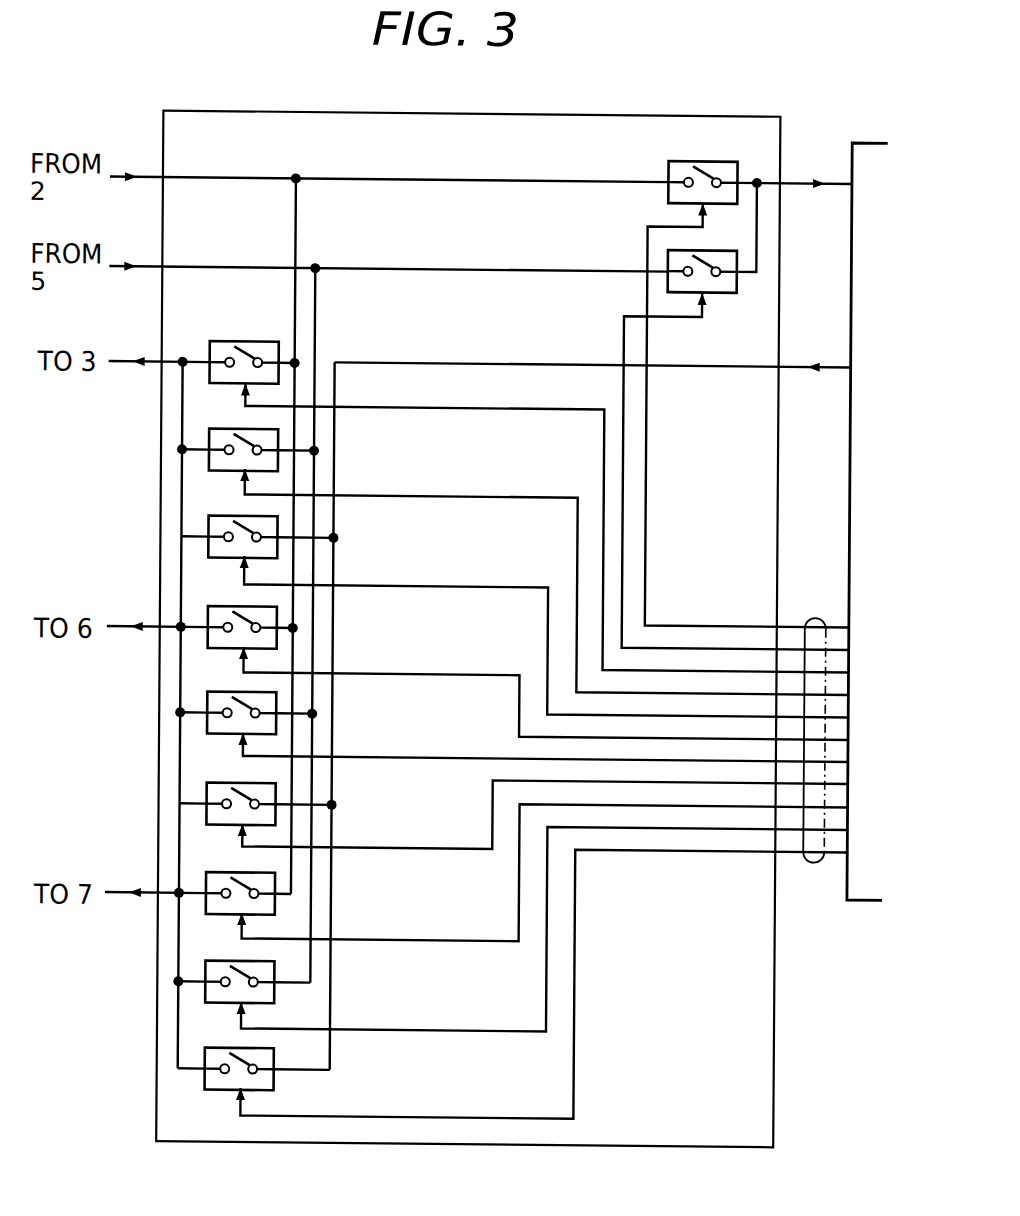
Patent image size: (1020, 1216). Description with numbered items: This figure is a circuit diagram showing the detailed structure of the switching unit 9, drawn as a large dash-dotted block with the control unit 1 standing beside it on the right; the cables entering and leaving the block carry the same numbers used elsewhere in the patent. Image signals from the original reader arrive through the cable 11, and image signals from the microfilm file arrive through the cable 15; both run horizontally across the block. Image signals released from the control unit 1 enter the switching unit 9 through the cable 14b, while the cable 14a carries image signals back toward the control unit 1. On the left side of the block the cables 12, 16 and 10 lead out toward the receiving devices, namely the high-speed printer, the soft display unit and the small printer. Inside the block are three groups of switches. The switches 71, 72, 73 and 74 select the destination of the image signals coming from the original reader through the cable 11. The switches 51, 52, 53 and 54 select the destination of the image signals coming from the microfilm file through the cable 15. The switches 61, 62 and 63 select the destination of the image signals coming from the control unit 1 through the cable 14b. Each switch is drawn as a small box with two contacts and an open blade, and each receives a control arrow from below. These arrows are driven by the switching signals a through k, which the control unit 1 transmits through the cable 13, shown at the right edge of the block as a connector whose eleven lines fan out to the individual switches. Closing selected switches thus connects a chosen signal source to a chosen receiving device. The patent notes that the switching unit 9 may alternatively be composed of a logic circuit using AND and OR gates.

The control unit 1 is at (862, 139).
The switching unit 9 is at (667, 113).
The output line to 7 10 is at (122, 894).
The cable 11 is at (121, 178).
The output line to 3 12 is at (122, 362).
The cable 13 is at (815, 859).
The signal line 14a is at (799, 185).
The cable 14b is at (795, 367).
The cable 15 is at (121, 268).
The output line to 6 16 is at (120, 628).
The switch 51 is at (721, 295).
The switch 52 is at (230, 431).
The switch 53 is at (230, 694).
The switch 54 is at (238, 965).
The switch 61 is at (230, 519).
The switch 62 is at (230, 786).
The switch 63 is at (231, 1050).
The switch 71 is at (667, 161).
The switch 72 is at (230, 344).
The switch 73 is at (230, 609).
The switch 74 is at (230, 875).